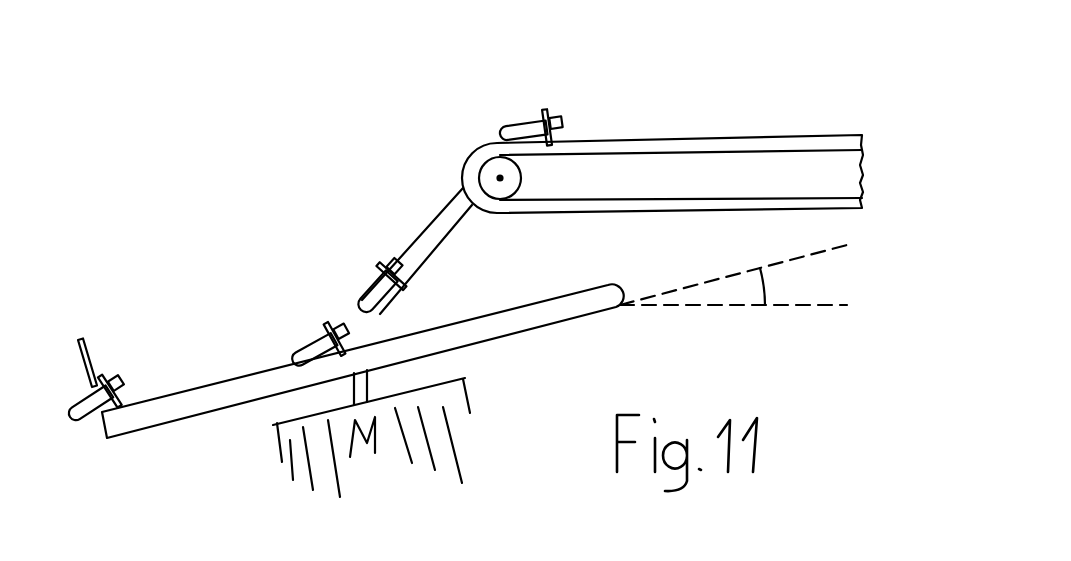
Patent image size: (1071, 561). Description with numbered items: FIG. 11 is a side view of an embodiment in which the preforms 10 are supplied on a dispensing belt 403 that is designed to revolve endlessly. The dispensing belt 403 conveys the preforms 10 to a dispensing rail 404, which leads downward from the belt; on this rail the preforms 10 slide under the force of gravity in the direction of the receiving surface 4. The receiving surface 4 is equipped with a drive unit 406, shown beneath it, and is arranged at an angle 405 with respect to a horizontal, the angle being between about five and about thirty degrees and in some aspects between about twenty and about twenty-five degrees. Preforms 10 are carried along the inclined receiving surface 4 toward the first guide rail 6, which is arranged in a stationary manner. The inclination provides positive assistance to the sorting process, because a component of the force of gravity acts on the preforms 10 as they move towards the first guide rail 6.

The receiving surface 4 is at (235, 383).
The first guide rail 6 is at (90, 356).
The preform 10 is at (72, 426).
The dispensing belt 403 is at (647, 138).
The dispensing rail 404 is at (418, 240).
The angle 405 is at (750, 287).
The drive unit 406 is at (322, 462).